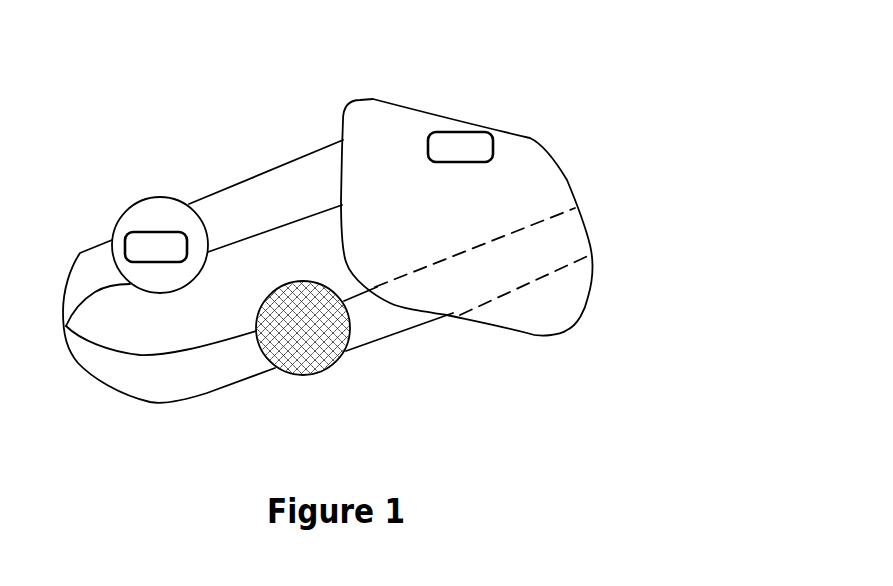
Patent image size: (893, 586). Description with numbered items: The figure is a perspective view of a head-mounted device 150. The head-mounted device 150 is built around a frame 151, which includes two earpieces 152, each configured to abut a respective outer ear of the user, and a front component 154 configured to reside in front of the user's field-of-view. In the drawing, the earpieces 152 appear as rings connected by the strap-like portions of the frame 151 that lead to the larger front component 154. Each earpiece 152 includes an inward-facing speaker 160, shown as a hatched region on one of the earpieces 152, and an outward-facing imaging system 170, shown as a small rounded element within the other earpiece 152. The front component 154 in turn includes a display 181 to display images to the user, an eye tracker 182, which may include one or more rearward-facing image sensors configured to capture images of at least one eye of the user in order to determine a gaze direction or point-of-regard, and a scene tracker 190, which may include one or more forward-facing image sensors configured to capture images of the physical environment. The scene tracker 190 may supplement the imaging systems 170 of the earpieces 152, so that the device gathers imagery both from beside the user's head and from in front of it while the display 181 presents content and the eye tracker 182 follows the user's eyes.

The head-mounted device 150 is at (414, 64).
The frame 151 is at (251, 183).
The earpiece 152 is at (128, 204).
The front component 154 is at (402, 137).
The inward-facing speaker 160 is at (320, 345).
The outward-facing imaging system 170 is at (125, 243).
The display 181 is at (446, 339).
The eye tracker 182 is at (459, 90).
The scene tracker 190 is at (458, 131).